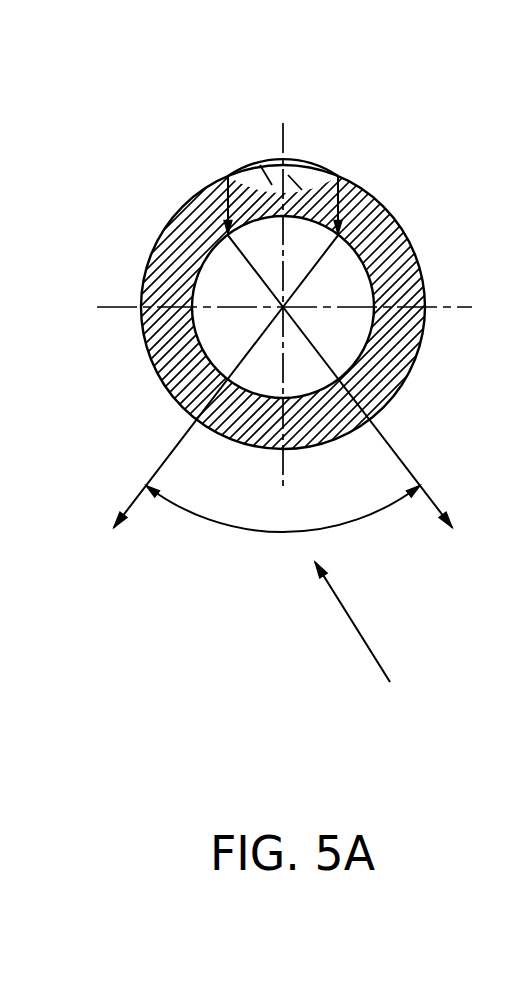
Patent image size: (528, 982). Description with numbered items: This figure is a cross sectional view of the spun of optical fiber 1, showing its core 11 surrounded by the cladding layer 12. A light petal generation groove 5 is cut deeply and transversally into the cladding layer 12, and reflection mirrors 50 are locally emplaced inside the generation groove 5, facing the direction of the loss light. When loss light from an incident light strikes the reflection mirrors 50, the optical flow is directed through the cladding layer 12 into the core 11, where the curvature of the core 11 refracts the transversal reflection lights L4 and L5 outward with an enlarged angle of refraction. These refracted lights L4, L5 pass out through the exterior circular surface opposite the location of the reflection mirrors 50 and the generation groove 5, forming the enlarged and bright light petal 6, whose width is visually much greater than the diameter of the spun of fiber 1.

The spun of optical fiber 1 is at (190, 207).
The light petal generation groove 5 is at (262, 158).
The reflection mirrors 50 is at (303, 177).
The core 11 is at (332, 260).
The cladding layer 12 is at (388, 338).
The light petal 6 is at (361, 636).
The transversal reflection light L4 is at (162, 465).
The transversal reflection light L5 is at (402, 459).